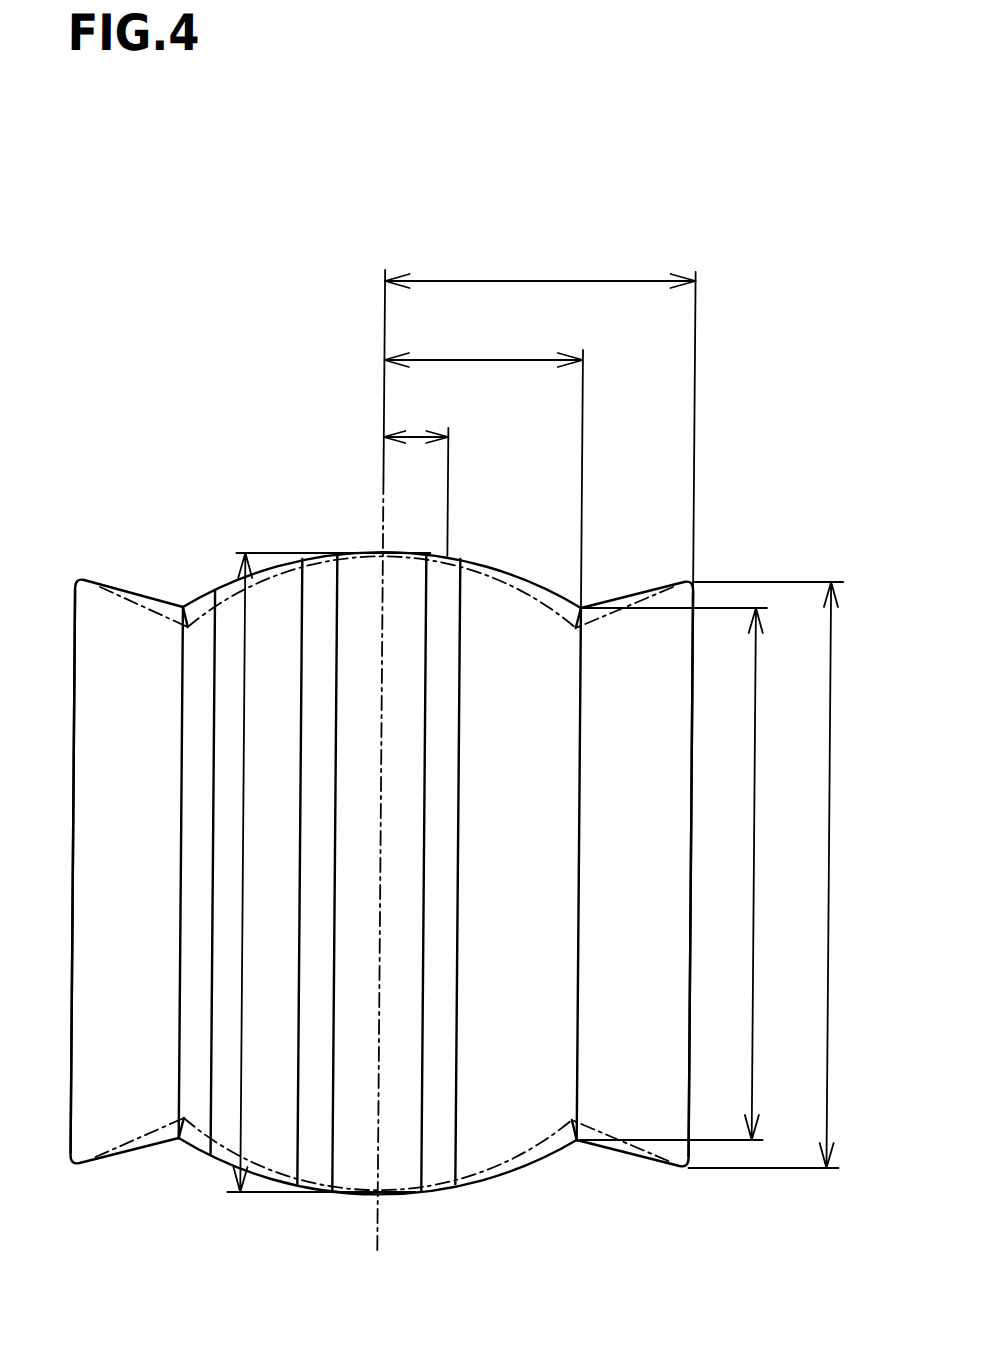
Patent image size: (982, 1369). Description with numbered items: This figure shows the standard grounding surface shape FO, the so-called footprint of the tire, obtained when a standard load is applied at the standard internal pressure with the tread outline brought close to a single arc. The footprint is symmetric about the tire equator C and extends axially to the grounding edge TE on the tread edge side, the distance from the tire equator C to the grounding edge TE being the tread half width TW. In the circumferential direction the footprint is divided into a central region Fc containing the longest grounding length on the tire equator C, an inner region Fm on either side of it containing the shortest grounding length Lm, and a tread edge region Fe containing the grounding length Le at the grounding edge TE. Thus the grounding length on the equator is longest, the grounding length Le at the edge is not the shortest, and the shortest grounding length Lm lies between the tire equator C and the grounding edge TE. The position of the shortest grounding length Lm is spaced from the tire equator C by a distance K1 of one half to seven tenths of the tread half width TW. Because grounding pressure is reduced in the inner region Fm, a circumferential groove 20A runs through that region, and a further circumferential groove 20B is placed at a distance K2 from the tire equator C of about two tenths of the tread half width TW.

The standard grounding surface shape FO is at (743, 382).
The grounding edge TE is at (693, 678).
The tread half width TW is at (542, 281).
The tire equator C is at (380, 310).
The distance from the tire equator at the position of the shortest grounding length K1 is at (489, 357).
The distance from the tire equator to the circumferential groove 20B K2 is at (413, 435).
The circumferential groove 20A is at (561, 632).
The circumferential groove 20B is at (447, 585).
The shortest grounding length Lm is at (754, 860).
The grounding length at the grounding edge Le is at (829, 832).
The inner region Fm is at (555, 1172).
The tread edge region Fe is at (698, 1180).
The central region Fc is at (436, 1255).